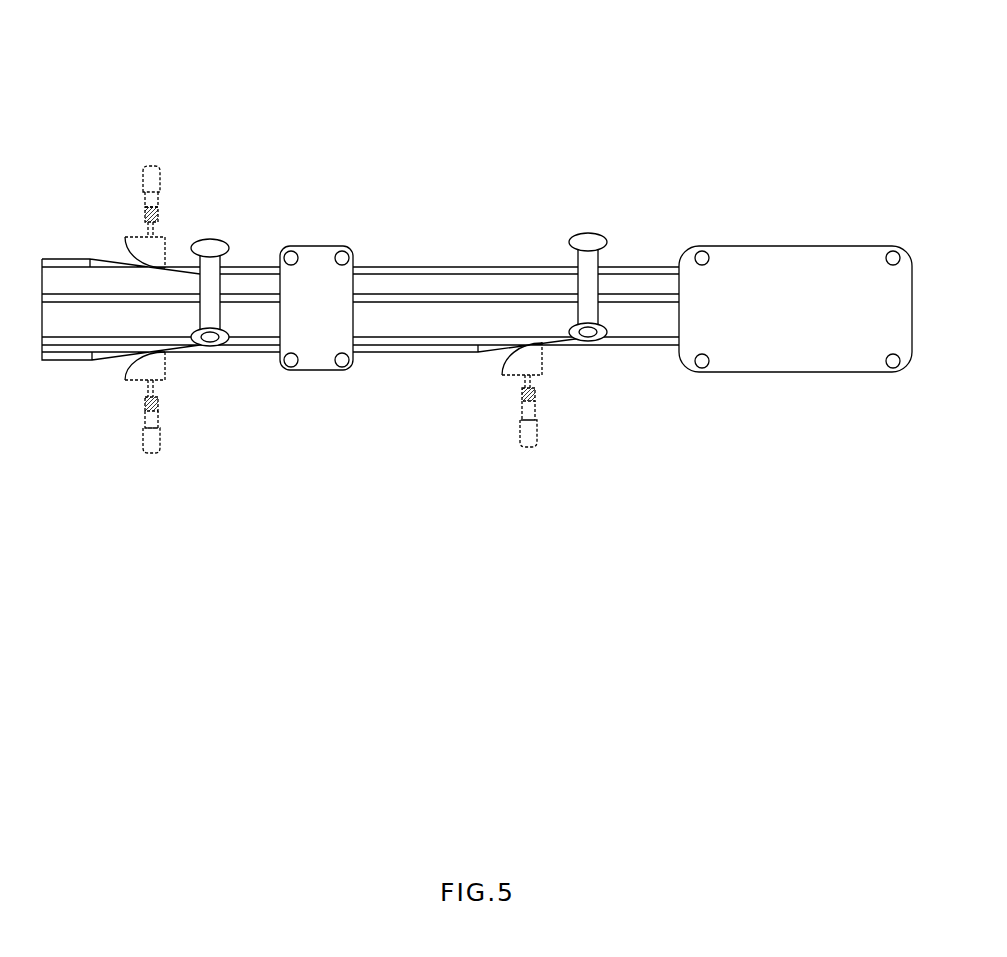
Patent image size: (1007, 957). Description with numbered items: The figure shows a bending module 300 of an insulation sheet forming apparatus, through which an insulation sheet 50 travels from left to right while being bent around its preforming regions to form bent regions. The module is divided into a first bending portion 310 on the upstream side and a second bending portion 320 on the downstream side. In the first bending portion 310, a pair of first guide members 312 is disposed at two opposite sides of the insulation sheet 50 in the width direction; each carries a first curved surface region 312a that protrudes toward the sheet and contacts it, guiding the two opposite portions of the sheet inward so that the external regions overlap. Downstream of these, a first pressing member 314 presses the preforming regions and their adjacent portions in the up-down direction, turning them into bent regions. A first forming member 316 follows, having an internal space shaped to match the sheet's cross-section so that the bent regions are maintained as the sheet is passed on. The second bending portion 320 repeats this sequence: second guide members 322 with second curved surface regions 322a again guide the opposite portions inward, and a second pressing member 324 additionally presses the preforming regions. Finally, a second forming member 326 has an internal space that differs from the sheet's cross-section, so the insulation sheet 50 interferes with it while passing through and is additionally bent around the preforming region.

The bending module 300 is at (96, 26).
The insulation sheet 50 is at (415, 353).
The first bending portion 310 is at (222, 145).
The first guide member 312 is at (119, 222).
The first curved surface region 312a is at (131, 260).
The first pressing member 314 is at (218, 348).
The first forming member 316 is at (313, 367).
The second bending portion 320 is at (596, 165).
The second guide member 322 is at (506, 392).
The second curved surface region 322a is at (513, 357).
The second pressing member 324 is at (595, 341).
The second forming member 326 is at (797, 367).